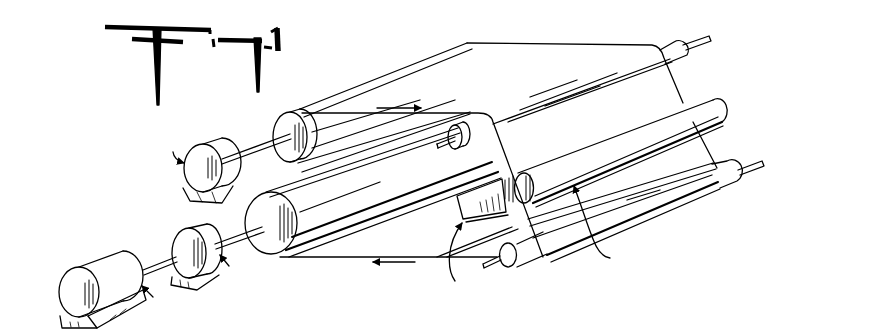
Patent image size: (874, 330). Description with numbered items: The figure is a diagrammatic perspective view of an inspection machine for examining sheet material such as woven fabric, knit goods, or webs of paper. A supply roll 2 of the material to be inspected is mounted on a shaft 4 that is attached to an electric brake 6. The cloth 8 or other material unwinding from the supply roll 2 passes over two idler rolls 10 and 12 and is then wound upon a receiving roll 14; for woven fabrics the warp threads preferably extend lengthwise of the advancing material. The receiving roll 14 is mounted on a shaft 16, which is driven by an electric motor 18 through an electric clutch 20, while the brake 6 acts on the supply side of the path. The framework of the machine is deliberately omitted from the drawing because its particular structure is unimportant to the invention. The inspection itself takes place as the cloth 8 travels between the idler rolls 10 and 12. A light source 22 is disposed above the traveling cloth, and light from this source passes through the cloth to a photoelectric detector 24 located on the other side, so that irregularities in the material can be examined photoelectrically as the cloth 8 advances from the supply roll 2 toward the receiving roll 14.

The roll 2 is at (280, 122).
The shaft 4 is at (260, 144).
The electric brake 6 is at (193, 181).
The cloth 8 is at (398, 73).
The idler roll 10 is at (470, 137).
The idler roll 12 is at (727, 178).
The receiving roll 14 is at (272, 192).
The shaft 16 is at (246, 228).
The electric motor 18 is at (67, 281).
The electric clutch 20 is at (177, 239).
The light source 22 is at (720, 125).
The detector 24 is at (456, 212).